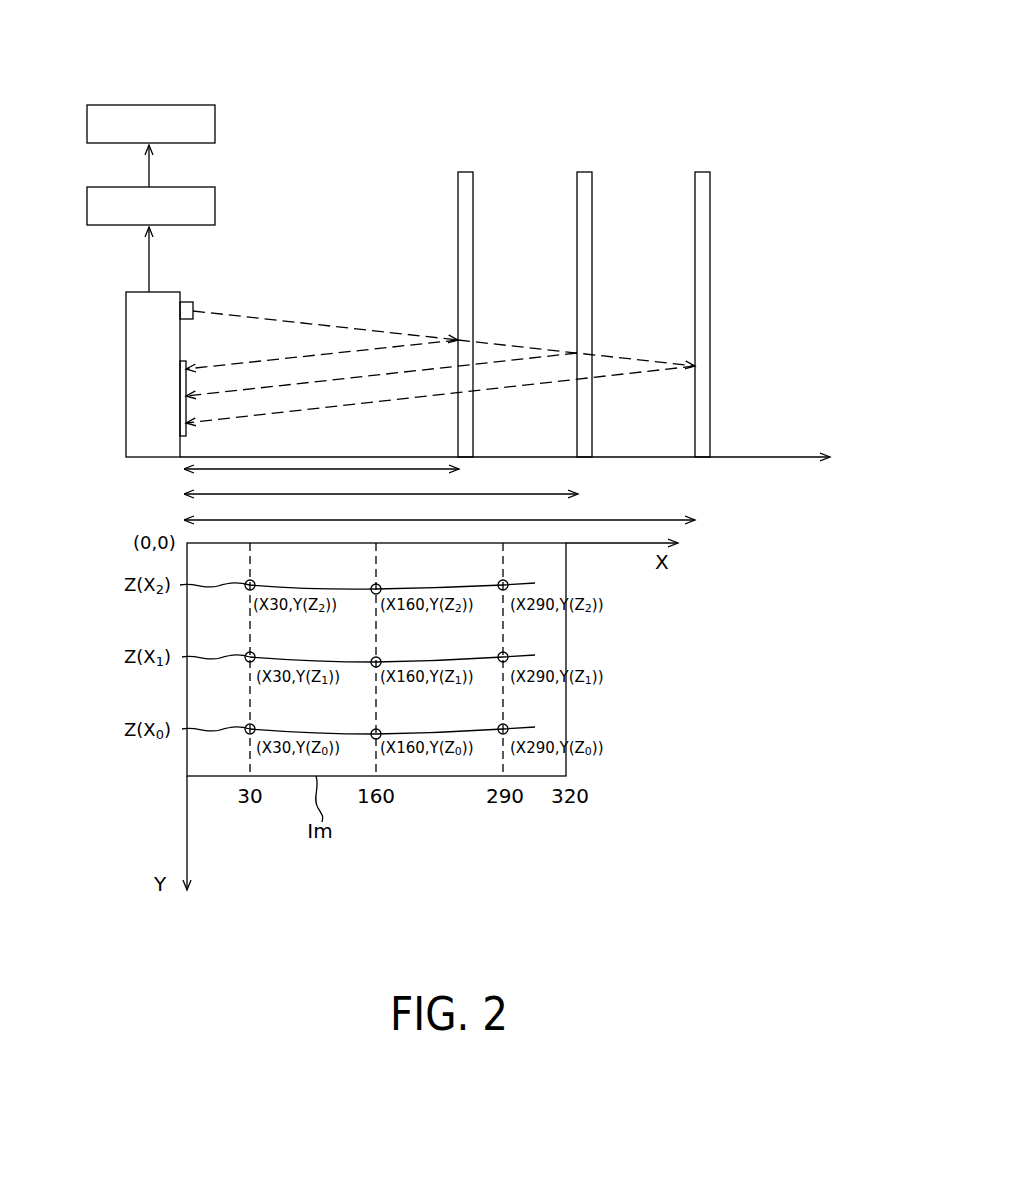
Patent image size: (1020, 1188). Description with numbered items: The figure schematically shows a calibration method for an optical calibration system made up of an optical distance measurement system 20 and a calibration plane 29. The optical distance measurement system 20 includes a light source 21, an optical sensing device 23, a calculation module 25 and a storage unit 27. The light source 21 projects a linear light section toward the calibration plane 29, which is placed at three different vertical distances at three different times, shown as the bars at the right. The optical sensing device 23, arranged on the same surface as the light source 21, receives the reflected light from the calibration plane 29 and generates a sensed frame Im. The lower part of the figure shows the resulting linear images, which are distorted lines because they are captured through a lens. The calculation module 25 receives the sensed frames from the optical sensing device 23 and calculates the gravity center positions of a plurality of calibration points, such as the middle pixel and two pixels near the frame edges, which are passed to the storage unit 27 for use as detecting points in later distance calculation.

The optical distance measurement system 20 is at (312, 68).
The light source 21 is at (193, 303).
The optical sensing device 23 is at (186, 388).
The calculation module 25 is at (215, 210).
The storage unit 27 is at (215, 128).
The calibration plane 29 is at (473, 238).